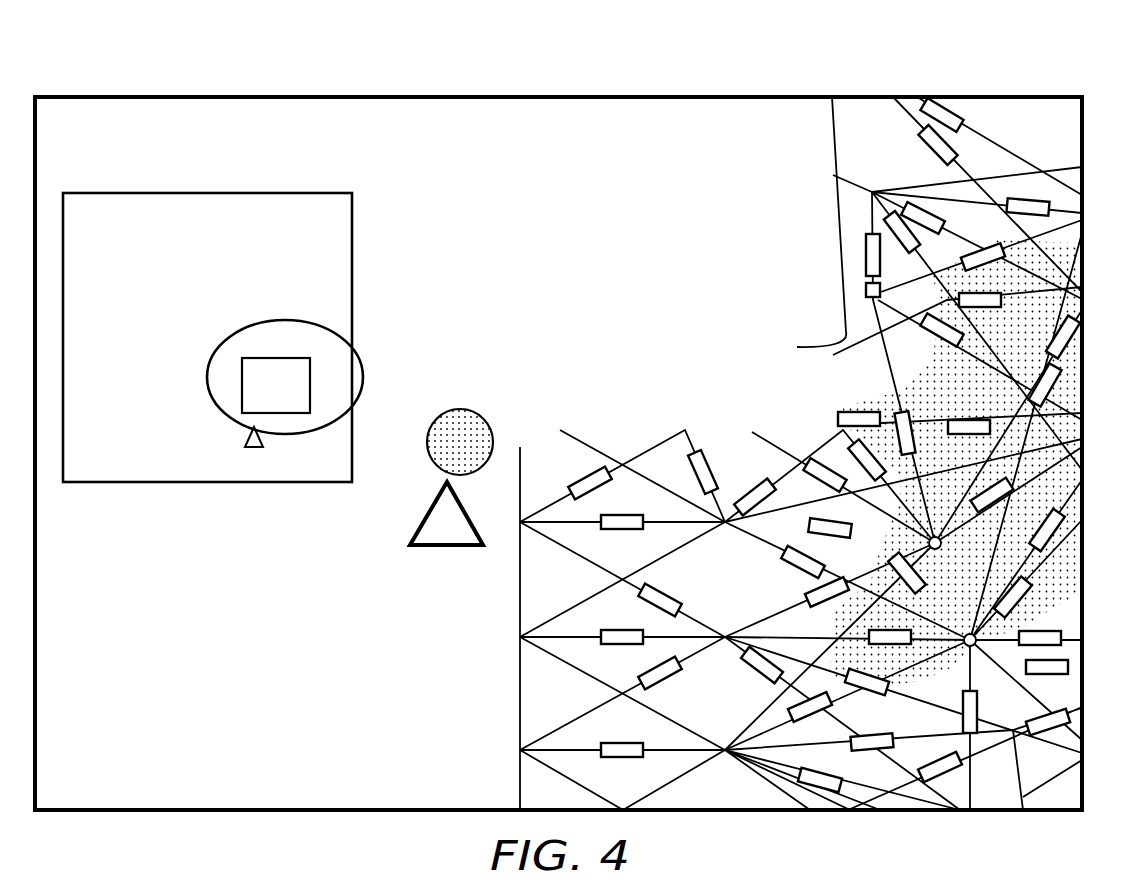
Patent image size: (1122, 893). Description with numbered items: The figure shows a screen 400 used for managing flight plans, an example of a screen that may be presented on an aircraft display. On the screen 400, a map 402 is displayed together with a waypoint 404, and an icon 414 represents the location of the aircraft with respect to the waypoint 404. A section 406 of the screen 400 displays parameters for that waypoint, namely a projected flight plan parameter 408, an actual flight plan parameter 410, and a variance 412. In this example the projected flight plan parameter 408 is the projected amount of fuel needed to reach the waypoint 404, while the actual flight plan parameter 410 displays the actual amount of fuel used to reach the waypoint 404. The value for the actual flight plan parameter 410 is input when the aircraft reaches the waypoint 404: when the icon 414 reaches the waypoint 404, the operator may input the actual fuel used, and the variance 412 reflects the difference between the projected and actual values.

The screen 400 is at (717, 97).
The map 402 is at (747, 310).
The waypoint 404 is at (462, 408).
The section 406 is at (162, 193).
The projected flight plan parameter 408 is at (158, 322).
The actual flight plan parameter 410 is at (132, 403).
The variance 412 is at (245, 437).
The icon 414 is at (447, 547).